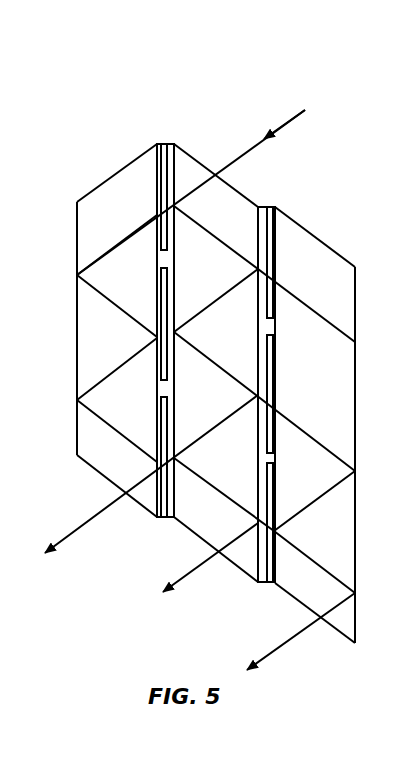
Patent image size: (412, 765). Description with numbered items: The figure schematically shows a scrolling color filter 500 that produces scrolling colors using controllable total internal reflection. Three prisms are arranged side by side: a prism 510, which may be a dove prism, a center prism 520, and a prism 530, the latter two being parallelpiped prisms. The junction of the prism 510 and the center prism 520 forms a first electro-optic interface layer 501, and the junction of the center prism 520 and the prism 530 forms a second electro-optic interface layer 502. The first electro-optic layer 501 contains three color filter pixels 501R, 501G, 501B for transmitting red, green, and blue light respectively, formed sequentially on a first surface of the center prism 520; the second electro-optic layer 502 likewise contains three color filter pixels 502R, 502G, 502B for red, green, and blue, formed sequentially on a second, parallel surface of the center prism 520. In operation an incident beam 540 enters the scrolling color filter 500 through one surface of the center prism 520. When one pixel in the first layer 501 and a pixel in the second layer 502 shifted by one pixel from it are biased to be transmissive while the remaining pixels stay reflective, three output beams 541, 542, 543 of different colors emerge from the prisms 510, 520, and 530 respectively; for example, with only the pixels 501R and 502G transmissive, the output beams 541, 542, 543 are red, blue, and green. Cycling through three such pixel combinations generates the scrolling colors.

The scrolling color filter 500 is at (104, 76).
The first electro-optic interface layer 501 is at (174, 144).
The red color filter pixel of first layer 501R is at (159, 153).
The green color filter pixel of first layer 501G is at (172, 288).
The blue color filter pixel of first layer 501B is at (166, 412).
The second electro-optic interface layer 502 is at (262, 207).
The red color filter pixel of second layer 502R is at (267, 224).
The green color filter pixel of second layer 502G is at (268, 342).
The blue color filter pixel of second layer 502B is at (267, 470).
The prism 510 is at (77, 328).
The center prism 520 is at (254, 580).
The prism 530 is at (341, 254).
The incident beam 540 is at (297, 108).
The output beam 541 is at (102, 505).
The output beam 542 is at (183, 575).
The output beam 543 is at (287, 640).